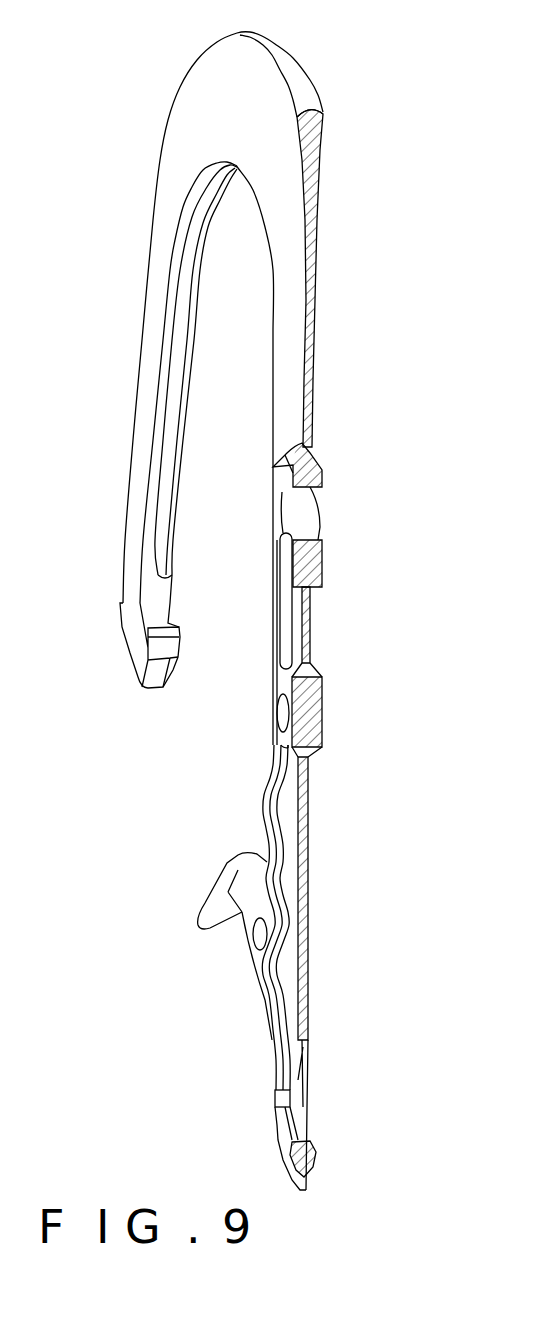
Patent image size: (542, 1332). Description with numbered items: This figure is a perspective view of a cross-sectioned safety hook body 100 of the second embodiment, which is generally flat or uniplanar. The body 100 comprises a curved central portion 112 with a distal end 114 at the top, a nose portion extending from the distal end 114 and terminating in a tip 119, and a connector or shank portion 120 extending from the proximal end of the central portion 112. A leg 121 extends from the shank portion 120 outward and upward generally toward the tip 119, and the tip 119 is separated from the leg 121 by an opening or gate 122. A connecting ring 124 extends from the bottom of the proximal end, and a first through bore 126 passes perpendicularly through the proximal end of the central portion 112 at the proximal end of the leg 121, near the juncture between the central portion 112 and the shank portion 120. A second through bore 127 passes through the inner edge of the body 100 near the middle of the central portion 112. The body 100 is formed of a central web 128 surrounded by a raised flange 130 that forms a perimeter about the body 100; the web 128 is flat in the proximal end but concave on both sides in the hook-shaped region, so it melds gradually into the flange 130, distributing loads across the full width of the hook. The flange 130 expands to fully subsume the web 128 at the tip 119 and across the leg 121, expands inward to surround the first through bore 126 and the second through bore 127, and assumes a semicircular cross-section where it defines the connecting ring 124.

The safety hook body 100 is at (122, 131).
The central portion 112 is at (280, 177).
The distal end 114 is at (238, 80).
The tip 119 is at (130, 640).
The shank portion 120 is at (290, 970).
The leg 121 is at (208, 890).
The gate 122 is at (220, 821).
The connecting ring 124 is at (280, 1120).
The first through bore 126 is at (256, 940).
The second through bore 127 is at (277, 713).
The central web 128 is at (313, 295).
The raised flange 130 is at (323, 116).